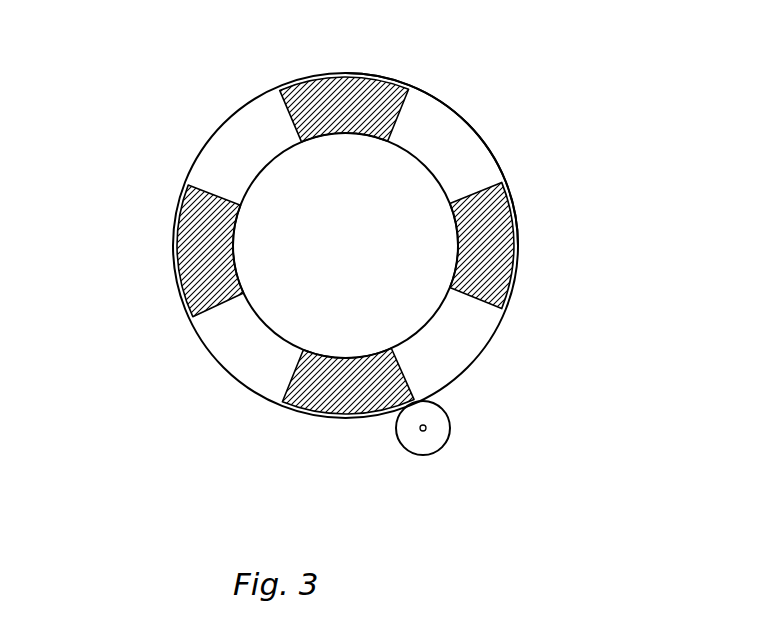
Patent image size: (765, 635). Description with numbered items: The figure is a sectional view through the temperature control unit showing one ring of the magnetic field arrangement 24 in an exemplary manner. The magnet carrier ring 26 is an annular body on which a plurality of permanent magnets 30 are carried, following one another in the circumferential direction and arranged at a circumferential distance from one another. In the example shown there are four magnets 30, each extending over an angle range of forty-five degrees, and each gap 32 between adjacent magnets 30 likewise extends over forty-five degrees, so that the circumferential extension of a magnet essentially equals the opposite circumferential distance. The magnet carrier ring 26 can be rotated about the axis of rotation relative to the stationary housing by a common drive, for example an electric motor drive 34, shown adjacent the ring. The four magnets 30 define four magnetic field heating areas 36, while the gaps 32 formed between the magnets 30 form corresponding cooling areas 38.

The magnetic field arrangement 24 is at (195, 363).
The magnet carrier ring 26 is at (455, 110).
The permanent magnet 30 is at (307, 90).
The gap 32 is at (213, 157).
The electric motor drive 34 is at (450, 445).
The magnetic field heating area 36 is at (368, 70).
The cooling area 38 is at (218, 112).